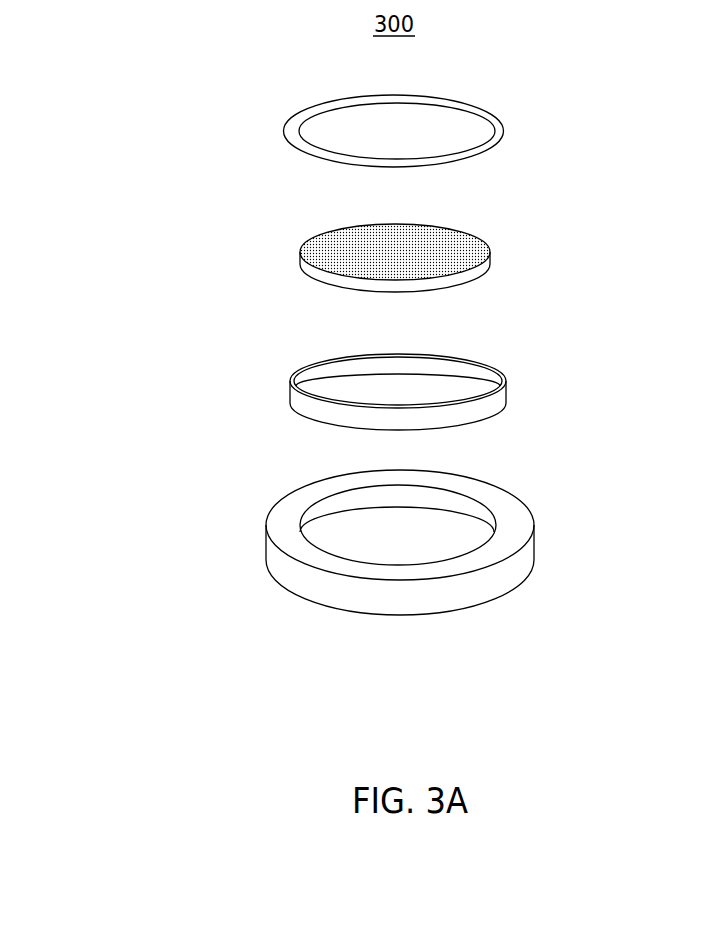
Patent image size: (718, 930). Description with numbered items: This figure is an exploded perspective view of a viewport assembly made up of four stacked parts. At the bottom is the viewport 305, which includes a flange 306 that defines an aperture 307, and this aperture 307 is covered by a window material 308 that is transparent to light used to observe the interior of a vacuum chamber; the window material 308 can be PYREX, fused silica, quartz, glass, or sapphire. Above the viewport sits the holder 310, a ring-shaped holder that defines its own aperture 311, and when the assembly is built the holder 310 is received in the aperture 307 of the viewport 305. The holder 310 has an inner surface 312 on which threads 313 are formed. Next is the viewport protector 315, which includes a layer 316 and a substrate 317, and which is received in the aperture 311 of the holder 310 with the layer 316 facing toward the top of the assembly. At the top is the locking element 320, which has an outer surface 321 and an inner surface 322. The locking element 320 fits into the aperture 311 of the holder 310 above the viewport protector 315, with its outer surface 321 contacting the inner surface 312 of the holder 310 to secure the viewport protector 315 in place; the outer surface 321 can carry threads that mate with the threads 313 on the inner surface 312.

The viewport 305 is at (410, 570).
The flange 306 is at (277, 527).
The aperture 307 is at (364, 528).
The window material 308 is at (395, 545).
The holder 310 is at (401, 395).
The aperture 311 is at (378, 388).
The inner surface 312 is at (290, 381).
The threads 313 is at (325, 362).
The viewport protector 315 is at (409, 260).
The layer 316 is at (328, 248).
The substrate 317 is at (320, 279).
The locking element 320 is at (390, 107).
The outer surface 321 is at (283, 128).
The inner surface 322 is at (318, 108).